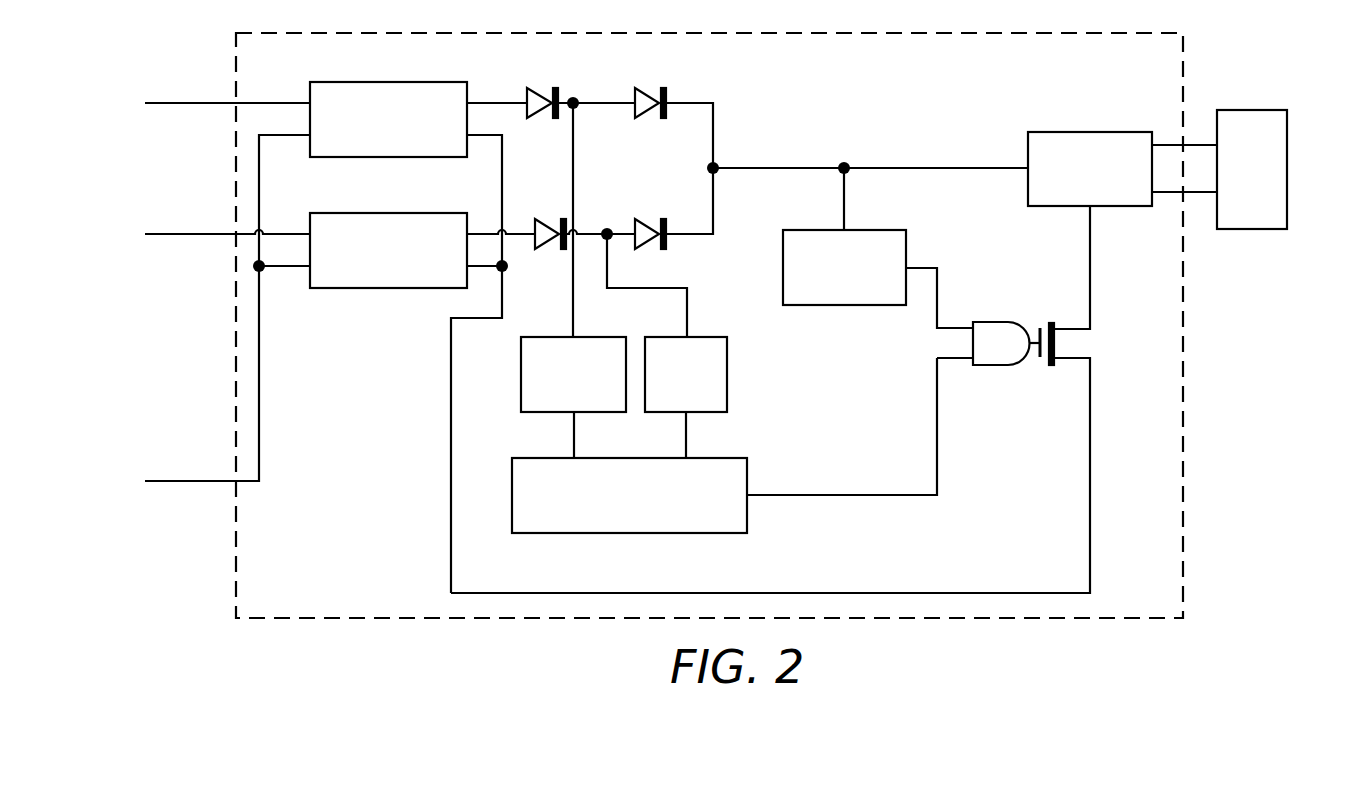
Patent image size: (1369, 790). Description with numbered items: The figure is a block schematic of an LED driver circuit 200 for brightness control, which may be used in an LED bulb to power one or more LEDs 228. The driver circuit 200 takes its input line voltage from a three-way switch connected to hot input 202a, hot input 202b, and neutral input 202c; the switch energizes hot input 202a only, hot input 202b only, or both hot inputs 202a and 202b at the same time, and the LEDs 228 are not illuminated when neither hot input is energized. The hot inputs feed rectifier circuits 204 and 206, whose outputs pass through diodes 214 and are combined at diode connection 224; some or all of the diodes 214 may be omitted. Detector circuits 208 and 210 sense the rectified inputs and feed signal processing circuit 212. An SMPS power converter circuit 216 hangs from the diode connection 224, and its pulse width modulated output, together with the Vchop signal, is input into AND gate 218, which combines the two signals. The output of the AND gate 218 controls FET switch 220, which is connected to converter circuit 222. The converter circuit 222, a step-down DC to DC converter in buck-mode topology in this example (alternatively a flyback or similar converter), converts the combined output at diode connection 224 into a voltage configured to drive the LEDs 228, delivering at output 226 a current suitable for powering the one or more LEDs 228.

The LED driver circuit 200 is at (1143, 33).
The hot input 202a is at (198, 100).
The hot input 202b is at (198, 231).
The neutral input 202c is at (198, 313).
The rectifier circuit 204 is at (440, 82).
The rectifier circuit 206 is at (440, 213).
The detector circuit 208 is at (538, 337).
The detector circuit 210 is at (712, 337).
The signal processing circuit 212 is at (735, 458).
The diodes 214 is at (590, 212).
The SMPS power converter circuit 216 is at (895, 230).
The AND gate 218 is at (990, 367).
The FET switch 220 is at (1066, 366).
The converter circuit 222 is at (1120, 132).
The diode connection 224 is at (719, 165).
The output 226 is at (1200, 144).
The LEDs 228 is at (1275, 110).